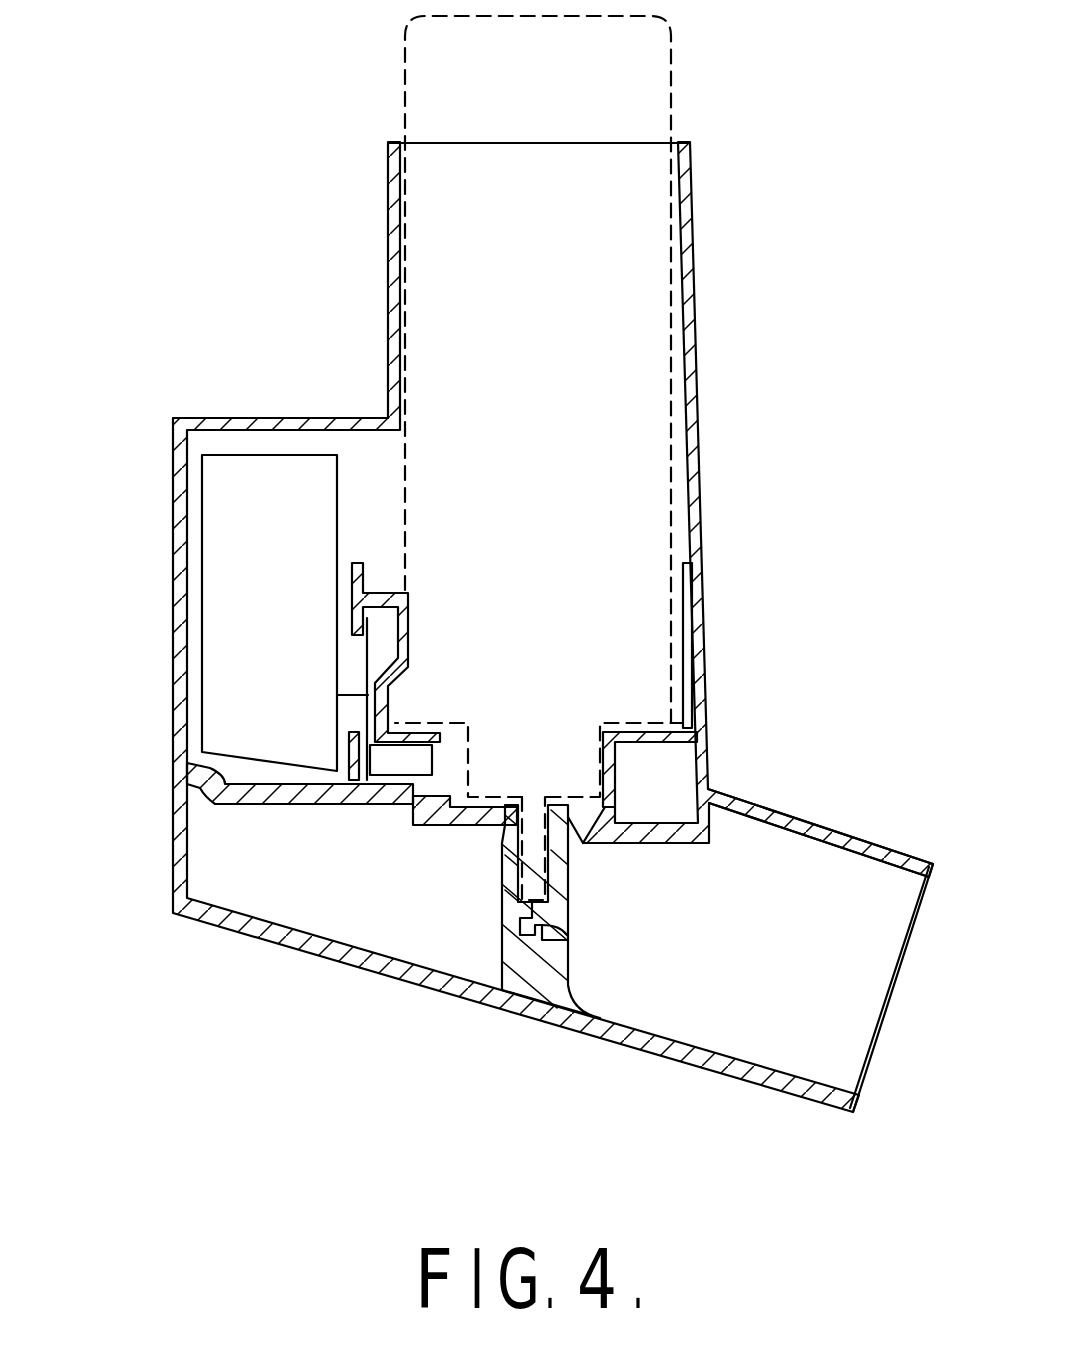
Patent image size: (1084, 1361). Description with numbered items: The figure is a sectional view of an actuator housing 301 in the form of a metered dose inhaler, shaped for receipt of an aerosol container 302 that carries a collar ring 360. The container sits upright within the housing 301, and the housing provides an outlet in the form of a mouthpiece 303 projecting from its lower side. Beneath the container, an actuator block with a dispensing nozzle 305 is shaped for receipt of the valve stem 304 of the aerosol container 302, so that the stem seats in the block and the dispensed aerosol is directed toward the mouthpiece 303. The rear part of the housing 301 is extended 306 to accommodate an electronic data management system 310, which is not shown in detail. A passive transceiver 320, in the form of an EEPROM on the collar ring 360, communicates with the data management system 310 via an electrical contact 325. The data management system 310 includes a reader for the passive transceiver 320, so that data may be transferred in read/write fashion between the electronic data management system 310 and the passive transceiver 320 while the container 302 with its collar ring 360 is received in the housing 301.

The actuator housing 301 is at (700, 455).
The aerosol container 302 is at (654, 41).
The mouthpiece 303 is at (752, 1083).
The valve stem 304 is at (537, 869).
The dispensing nozzle 305 is at (516, 928).
The extended rear part 306 is at (272, 418).
The electronic data management system 310 is at (280, 605).
The passive transceiver 320 is at (385, 758).
The electrical contact 325 is at (347, 700).
The collar ring 360 is at (686, 630).